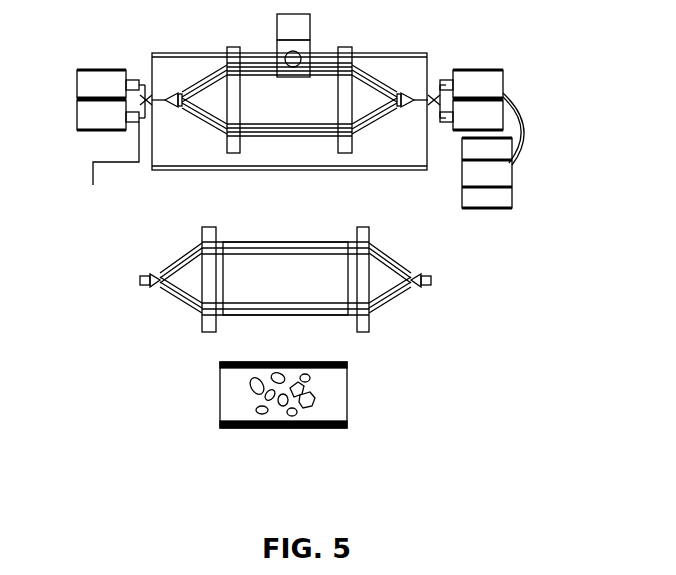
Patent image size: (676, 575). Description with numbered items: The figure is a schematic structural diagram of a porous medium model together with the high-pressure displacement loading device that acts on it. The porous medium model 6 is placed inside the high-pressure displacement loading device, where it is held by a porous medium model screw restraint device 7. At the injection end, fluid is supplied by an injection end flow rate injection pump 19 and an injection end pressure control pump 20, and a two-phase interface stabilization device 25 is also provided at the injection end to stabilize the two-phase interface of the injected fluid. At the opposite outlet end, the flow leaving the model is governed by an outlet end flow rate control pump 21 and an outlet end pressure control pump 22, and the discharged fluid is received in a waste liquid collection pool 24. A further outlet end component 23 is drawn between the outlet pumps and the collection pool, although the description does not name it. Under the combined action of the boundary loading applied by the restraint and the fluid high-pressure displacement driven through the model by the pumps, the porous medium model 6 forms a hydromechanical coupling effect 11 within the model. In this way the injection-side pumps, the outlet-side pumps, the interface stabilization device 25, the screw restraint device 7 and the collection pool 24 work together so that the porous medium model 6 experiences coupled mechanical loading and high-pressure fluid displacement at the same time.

The porous medium model 6 is at (347, 365).
The porous medium model screw restraint device 7 is at (425, 292).
The hydromechanical coupling effect 11 is at (366, 281).
The injection end flow rate injection pump 19 is at (80, 103).
The injection end pressure control pump 20 is at (80, 135).
The outlet end flow rate control pump 21 is at (543, 101).
The outlet end pressure control pump 22 is at (542, 130).
The sensor unit 23 is at (310, 45).
The waste liquid collection pool 24 is at (536, 178).
The two-phase interface stabilization device 25 is at (113, 278).